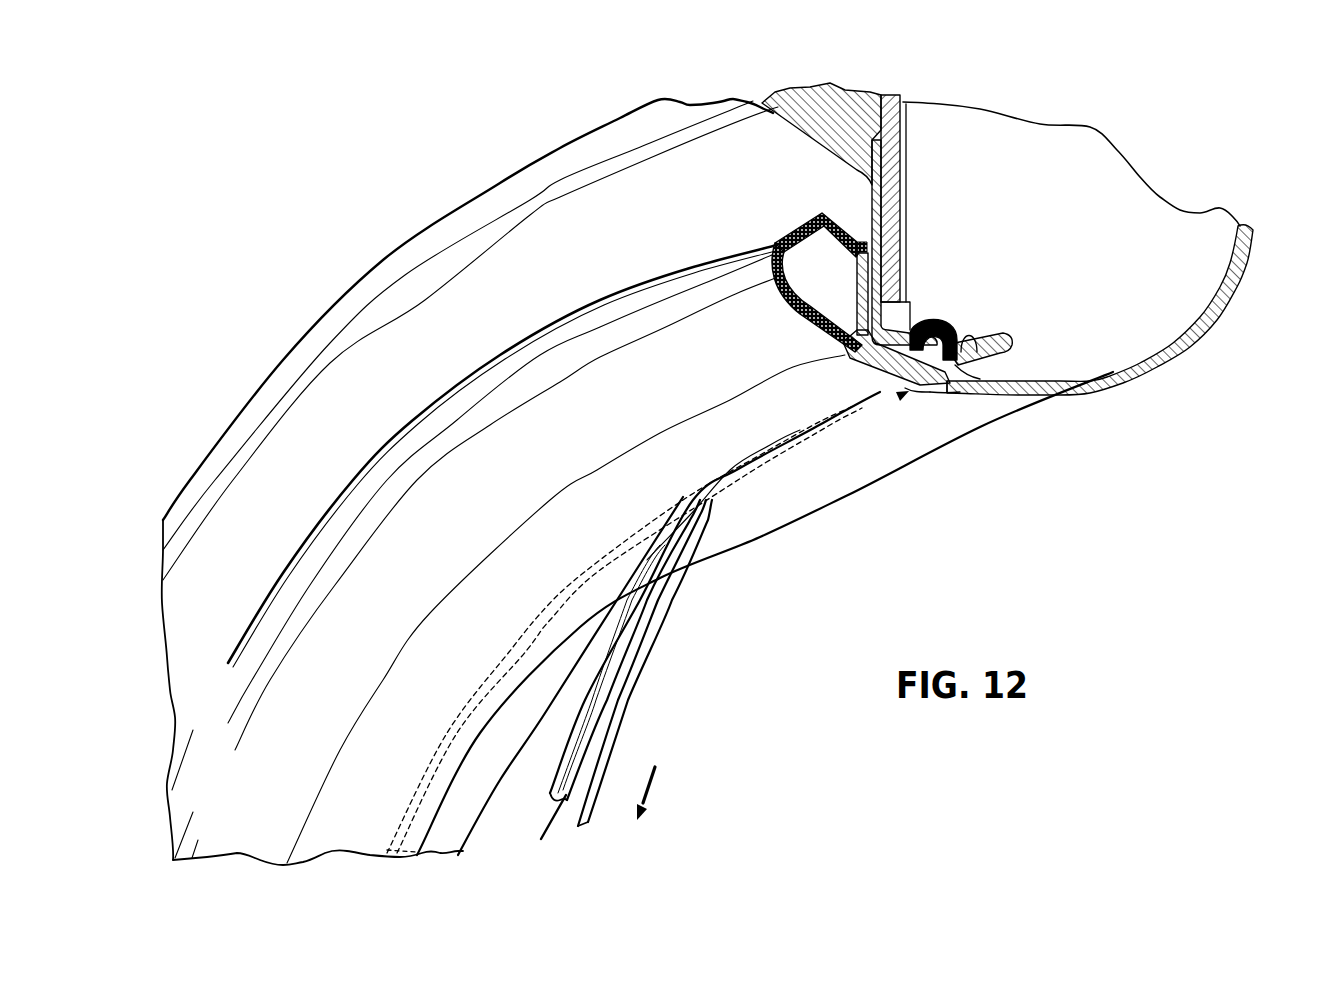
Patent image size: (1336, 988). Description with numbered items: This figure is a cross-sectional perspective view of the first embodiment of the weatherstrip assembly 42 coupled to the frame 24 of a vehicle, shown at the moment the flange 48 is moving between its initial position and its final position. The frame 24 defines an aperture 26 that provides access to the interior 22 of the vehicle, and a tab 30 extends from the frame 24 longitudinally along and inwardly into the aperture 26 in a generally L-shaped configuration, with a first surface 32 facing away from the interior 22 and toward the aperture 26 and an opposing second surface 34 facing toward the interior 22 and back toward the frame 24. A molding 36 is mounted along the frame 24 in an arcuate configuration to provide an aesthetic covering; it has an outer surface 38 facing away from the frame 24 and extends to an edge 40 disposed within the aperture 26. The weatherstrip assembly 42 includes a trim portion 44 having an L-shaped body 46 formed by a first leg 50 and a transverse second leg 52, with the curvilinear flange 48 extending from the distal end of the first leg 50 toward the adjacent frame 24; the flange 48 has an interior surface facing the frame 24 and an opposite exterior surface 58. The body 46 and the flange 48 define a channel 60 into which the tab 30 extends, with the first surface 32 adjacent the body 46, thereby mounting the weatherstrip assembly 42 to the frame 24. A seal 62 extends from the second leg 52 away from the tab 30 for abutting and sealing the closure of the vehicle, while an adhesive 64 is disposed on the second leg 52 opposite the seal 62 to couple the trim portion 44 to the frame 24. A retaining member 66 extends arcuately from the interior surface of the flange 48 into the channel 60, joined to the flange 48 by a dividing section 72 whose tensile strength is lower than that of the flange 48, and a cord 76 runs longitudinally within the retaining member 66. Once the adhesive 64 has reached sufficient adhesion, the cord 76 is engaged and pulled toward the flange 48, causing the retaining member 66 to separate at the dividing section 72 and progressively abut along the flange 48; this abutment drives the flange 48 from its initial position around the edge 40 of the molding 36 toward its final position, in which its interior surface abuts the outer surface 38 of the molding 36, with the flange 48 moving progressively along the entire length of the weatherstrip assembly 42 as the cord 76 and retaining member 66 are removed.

The interior 22 is at (1253, 267).
The frame 24 is at (500, 156).
The aperture 26 is at (424, 332).
The tab 30 is at (928, 378).
The first surface 32 is at (878, 372).
The second surface 34 is at (912, 318).
The molding 36 is at (1200, 347).
The outer surface 38 is at (771, 510).
The edge 40 is at (843, 423).
The weatherstrip assembly 42 is at (986, 452).
The trim portion 44 is at (915, 385).
The body 46 is at (856, 224).
The flange 48 is at (1002, 352).
The first leg 50 is at (888, 395).
The second leg 52 is at (853, 273).
The exterior surface 58 is at (989, 355).
The channel 60 is at (975, 355).
The seal 62 is at (803, 308).
The adhesive 64 is at (903, 240).
The retaining member 66 is at (937, 318).
The dividing section 72 is at (937, 375).
The cord 76 is at (550, 830).